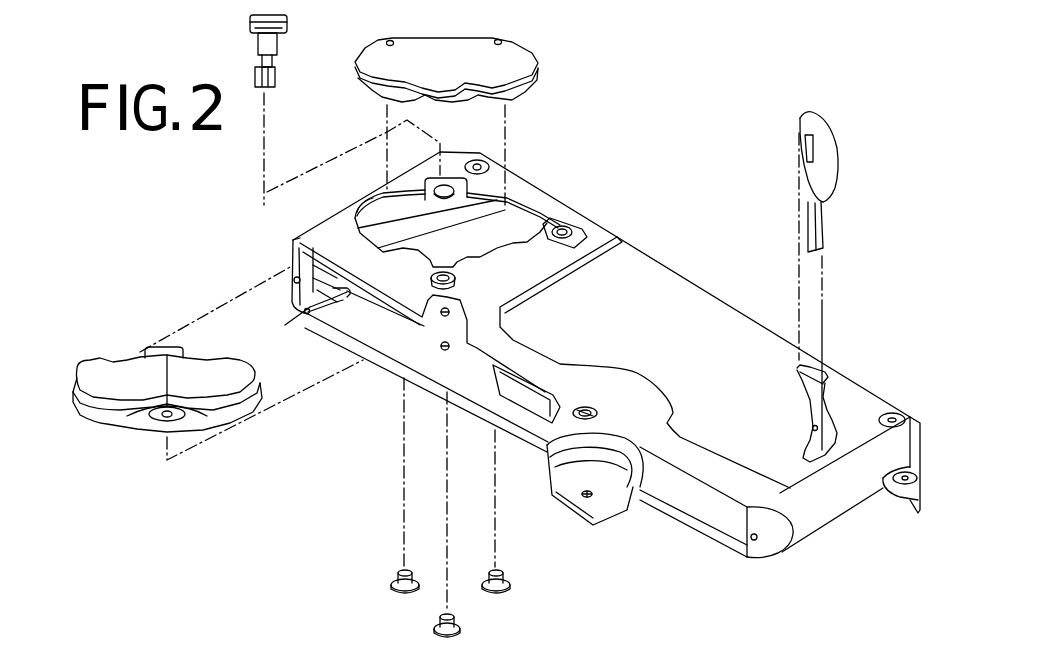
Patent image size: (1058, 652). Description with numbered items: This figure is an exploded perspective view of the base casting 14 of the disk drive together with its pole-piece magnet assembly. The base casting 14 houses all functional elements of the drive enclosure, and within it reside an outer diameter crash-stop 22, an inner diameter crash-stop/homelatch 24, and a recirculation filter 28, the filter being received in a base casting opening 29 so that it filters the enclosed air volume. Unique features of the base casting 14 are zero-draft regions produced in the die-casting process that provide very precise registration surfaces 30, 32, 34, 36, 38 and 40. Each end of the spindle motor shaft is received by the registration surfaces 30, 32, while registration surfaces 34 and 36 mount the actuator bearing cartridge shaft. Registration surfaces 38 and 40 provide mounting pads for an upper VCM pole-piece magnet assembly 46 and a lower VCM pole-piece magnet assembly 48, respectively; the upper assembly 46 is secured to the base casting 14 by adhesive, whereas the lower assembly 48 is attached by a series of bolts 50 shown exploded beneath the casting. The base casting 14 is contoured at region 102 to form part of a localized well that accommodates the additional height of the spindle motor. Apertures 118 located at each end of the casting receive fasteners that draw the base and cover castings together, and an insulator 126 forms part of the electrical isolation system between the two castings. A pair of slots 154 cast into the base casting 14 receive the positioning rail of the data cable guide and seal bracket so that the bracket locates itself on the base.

The base casting 14 is at (687, 280).
The outer diameter crash-stop 22 is at (563, 235).
The inner diameter crash-stop/homelatch 24 is at (288, 23).
The recirculation filter 28 is at (840, 168).
The base casting opening 29 is at (828, 397).
The registration surface 30 is at (613, 397).
The registration surface 32 is at (587, 498).
The registration surface 34 is at (455, 282).
The registration surface 36 is at (444, 348).
The registration surface 38 is at (505, 203).
The registration surface 40 is at (441, 313).
The upper VCM pole-piece magnet assembly 46 is at (457, 57).
The lower VCM pole-piece magnet assembly 48 is at (135, 350).
The bolts 50 is at (438, 630).
The region 102 is at (617, 468).
The apertures 118 is at (296, 280).
The insulators 126 is at (877, 393).
The slots 154 is at (310, 310).